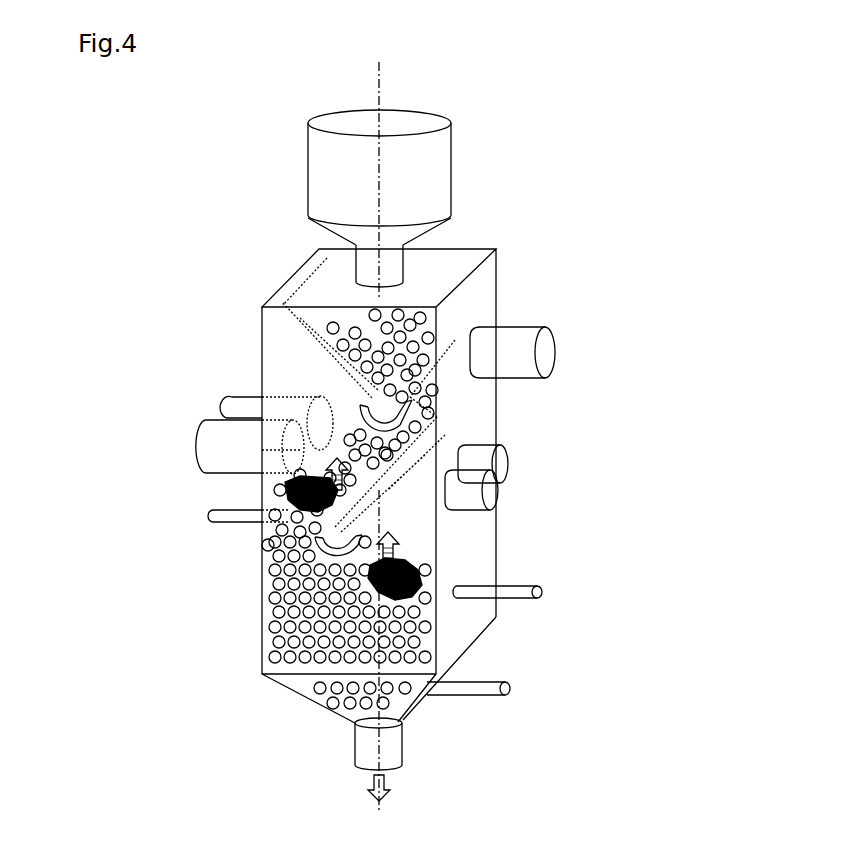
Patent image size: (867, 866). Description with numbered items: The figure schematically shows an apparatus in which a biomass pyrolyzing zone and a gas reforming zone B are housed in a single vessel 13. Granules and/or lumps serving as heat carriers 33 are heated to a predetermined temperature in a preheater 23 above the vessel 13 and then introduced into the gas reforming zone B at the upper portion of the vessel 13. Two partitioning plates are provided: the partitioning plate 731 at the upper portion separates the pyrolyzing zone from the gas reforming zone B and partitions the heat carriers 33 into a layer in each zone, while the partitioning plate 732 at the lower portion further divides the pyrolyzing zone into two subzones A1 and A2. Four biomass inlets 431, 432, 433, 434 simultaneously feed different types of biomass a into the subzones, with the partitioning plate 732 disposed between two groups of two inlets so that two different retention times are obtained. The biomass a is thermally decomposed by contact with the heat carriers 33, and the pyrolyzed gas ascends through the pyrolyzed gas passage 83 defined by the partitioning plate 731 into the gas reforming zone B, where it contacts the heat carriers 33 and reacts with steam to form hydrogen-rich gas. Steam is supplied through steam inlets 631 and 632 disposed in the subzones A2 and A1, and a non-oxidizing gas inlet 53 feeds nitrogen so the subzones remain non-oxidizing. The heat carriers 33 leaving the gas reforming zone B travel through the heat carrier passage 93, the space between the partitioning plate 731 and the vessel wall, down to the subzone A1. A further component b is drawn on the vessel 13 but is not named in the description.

The preheater 23 is at (402, 122).
The vessel 13 is at (498, 270).
The granules and/or lumps (heat carriers) 33 is at (413, 334).
The pyrolyzed gas passage 83 is at (424, 408).
The heat carrier passage 93 is at (424, 408).
The gas reforming zone B is at (415, 379).
The drive cylinder b is at (548, 350).
The partitioning plate 731 is at (312, 360).
The partitioning plate 732 is at (383, 460).
The biomass inlet 431 is at (222, 403).
The biomass inlet 432 is at (192, 447).
The biomass inlet 433 is at (516, 455).
The biomass inlet 434 is at (503, 497).
The steam inlet 631 is at (200, 518).
The steam inlet 632 is at (515, 688).
The non-oxidizing gas inlet 53 is at (548, 592).
The biomass a is at (283, 493).
The biomass pyrolyzing subzone A1 is at (430, 593).
The biomass pyrolyzing subzone A2 is at (355, 470).